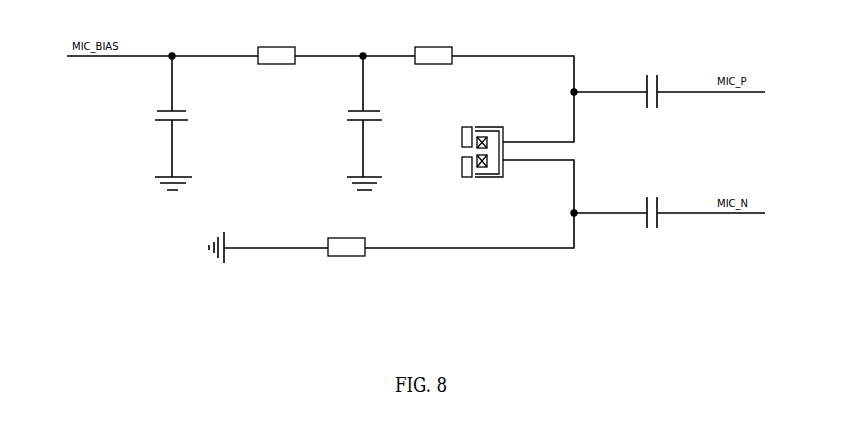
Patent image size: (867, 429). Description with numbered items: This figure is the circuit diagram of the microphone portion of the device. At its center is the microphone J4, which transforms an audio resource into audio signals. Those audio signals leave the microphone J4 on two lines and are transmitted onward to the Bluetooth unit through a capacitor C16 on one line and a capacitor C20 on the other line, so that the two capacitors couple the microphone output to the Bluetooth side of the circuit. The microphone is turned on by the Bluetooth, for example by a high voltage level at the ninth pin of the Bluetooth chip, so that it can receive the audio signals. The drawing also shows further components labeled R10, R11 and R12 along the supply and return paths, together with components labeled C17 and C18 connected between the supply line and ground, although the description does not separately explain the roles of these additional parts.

The resistor R10 is at (259, 55).
The resistor R11 is at (409, 54).
The resistor R12 is at (330, 245).
The capacitor C16 is at (647, 102).
The capacitor C17 is at (182, 123).
The capacitor C18 is at (374, 123).
The capacitor C20 is at (647, 201).
The microphone J4 is at (482, 141).